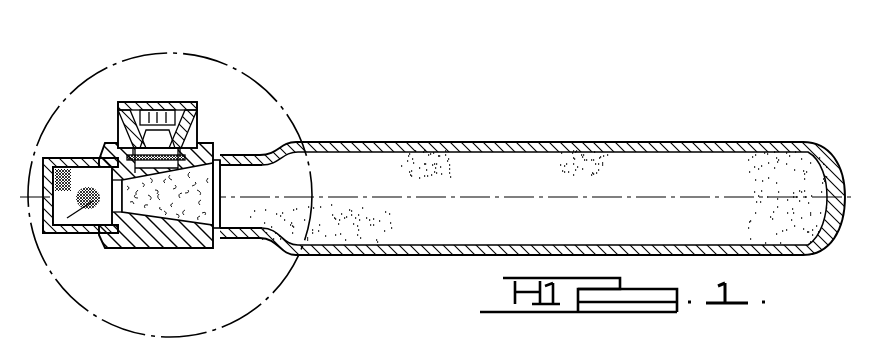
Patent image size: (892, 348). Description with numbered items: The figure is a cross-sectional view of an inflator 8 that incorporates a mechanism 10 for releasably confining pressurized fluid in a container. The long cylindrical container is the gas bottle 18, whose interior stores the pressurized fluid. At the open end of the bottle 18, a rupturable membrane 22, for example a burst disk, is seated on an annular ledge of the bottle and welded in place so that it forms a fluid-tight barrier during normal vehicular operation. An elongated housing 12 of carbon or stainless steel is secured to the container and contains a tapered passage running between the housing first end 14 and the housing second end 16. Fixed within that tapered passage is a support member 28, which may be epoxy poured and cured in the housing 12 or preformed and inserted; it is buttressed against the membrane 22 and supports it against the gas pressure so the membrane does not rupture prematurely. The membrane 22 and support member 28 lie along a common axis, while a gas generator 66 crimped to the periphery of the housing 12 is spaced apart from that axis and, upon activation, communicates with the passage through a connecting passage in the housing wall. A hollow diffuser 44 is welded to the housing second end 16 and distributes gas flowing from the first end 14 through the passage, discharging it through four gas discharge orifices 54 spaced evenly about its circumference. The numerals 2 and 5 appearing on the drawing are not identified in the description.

The sample material 2 is at (440, 178).
The enlarged detail region 5 is at (281, 90).
The inflator 8 is at (532, 172).
The mechanism 10 is at (440, 176).
The housing 12 is at (219, 146).
The housing first end 14 is at (212, 250).
The housing second end 16 is at (108, 250).
The gas bottle 18 is at (544, 141).
The rupturable membrane 22 is at (236, 168).
The support member 28 is at (168, 200).
The diffuser 44 is at (58, 239).
The gas discharge orifices 54 is at (87, 160).
The gas generator 66 is at (198, 100).